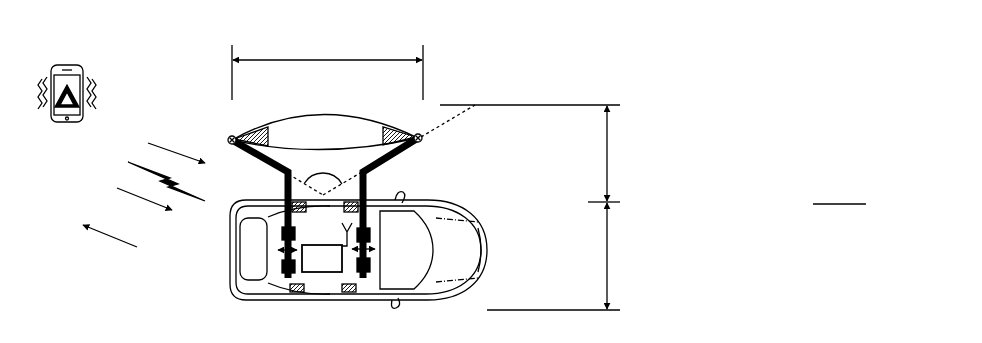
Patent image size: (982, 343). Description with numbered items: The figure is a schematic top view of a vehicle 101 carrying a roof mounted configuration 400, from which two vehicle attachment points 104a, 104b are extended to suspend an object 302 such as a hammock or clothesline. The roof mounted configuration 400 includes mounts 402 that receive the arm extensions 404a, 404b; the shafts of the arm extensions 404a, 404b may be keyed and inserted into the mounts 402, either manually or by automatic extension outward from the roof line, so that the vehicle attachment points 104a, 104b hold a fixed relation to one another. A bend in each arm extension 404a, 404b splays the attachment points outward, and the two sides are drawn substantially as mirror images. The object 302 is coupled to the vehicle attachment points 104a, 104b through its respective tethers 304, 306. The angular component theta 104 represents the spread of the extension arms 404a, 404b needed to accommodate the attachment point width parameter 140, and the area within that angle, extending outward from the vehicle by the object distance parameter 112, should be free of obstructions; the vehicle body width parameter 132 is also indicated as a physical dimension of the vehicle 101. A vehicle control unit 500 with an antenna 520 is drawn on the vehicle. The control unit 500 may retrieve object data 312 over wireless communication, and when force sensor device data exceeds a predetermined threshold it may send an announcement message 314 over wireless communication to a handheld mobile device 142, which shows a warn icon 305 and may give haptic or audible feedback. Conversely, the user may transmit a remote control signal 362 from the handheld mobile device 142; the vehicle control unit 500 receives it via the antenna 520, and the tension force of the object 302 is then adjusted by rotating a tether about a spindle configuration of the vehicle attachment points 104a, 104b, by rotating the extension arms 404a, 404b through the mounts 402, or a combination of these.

The handheld mobile device 142 is at (69, 52).
The warn icon 305 is at (83, 118).
The remote control signal 362 is at (232, 140).
The object data 312 is at (152, 210).
The announcement message 314 is at (100, 236).
The attachment point width parameter 140 is at (327, 59).
The object 302 is at (297, 111).
The angular component theta 104 is at (353, 150).
The vehicle attachment point 104b is at (226, 149).
The vehicle attachment point 104a is at (421, 148).
The tether 306 is at (239, 130).
The tether 304 is at (413, 130).
The arm extension 404b is at (284, 177).
The arm extension 404a is at (372, 168).
The vehicle 101 is at (487, 236).
The mounts 402 is at (283, 244).
The antenna 520 is at (342, 247).
The vehicle control unit 500 is at (322, 258).
The object distance parameter 112 is at (611, 166).
The vehicle body width parameter 132 is at (601, 256).
The roof mounted configuration 400 is at (835, 215).